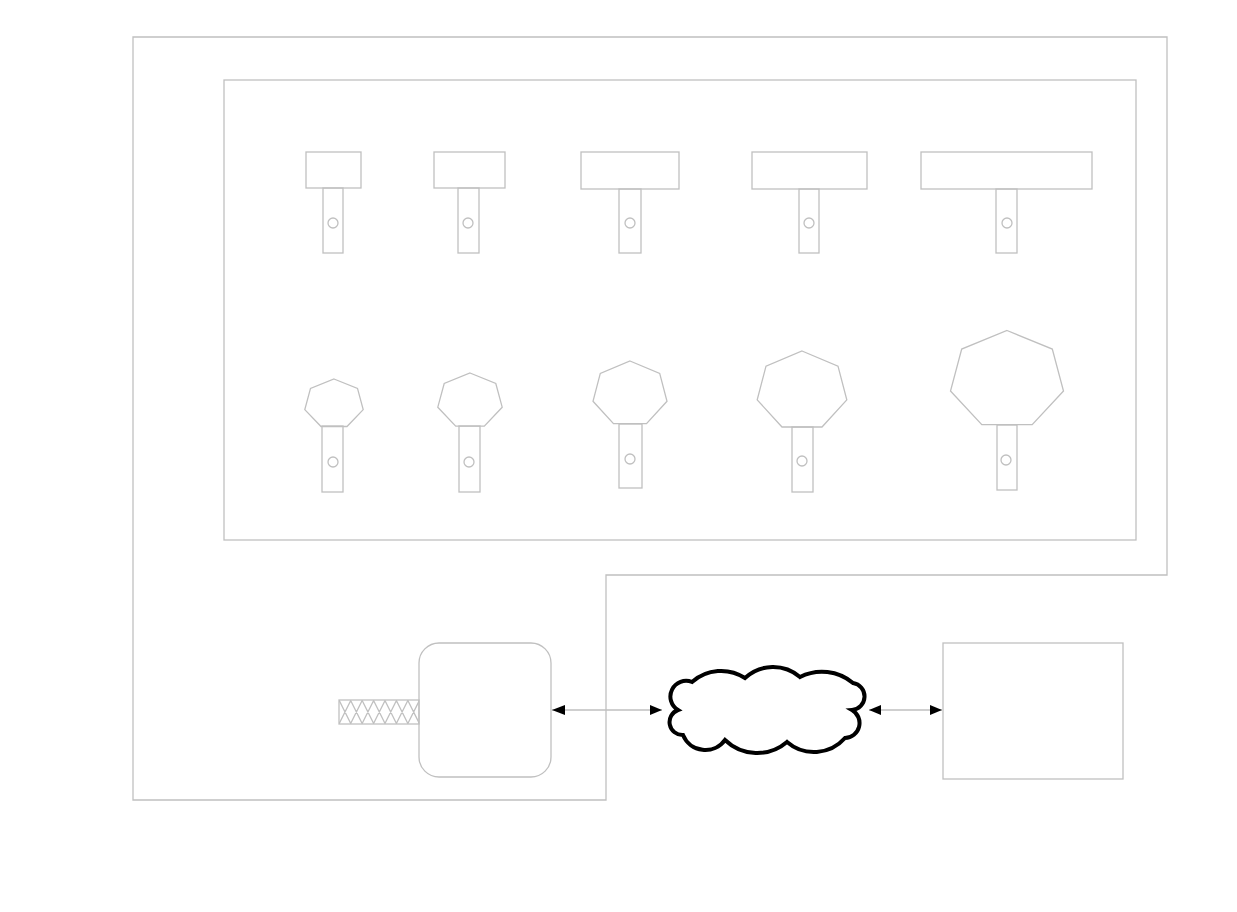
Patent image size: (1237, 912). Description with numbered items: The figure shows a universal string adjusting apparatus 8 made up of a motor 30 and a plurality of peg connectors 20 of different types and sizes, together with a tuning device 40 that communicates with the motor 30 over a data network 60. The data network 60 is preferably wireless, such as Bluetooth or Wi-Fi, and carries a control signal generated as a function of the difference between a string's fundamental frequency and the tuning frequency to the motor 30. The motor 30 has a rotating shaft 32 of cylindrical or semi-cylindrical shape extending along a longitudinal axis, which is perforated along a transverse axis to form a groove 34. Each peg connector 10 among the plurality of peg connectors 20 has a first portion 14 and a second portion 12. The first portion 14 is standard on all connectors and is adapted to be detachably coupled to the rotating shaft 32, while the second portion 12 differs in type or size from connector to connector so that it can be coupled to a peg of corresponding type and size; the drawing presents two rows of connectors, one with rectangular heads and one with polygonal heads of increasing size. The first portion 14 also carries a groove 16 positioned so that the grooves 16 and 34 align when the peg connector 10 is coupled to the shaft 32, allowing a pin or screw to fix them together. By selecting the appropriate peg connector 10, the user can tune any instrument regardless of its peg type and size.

The universal string adjusting apparatus 8 is at (1167, 260).
The peg connector 10 is at (1057, 199).
The second portion 12 is at (328, 152).
The first portion 14 is at (333, 254).
The groove 16 is at (328, 222).
The plurality of peg connectors 20 is at (224, 203).
The motor 30 is at (470, 636).
The rotating shaft 32 is at (339, 712).
The groove 34 is at (385, 700).
The tuning device 40 is at (1033, 643).
The data network 60 is at (768, 666).